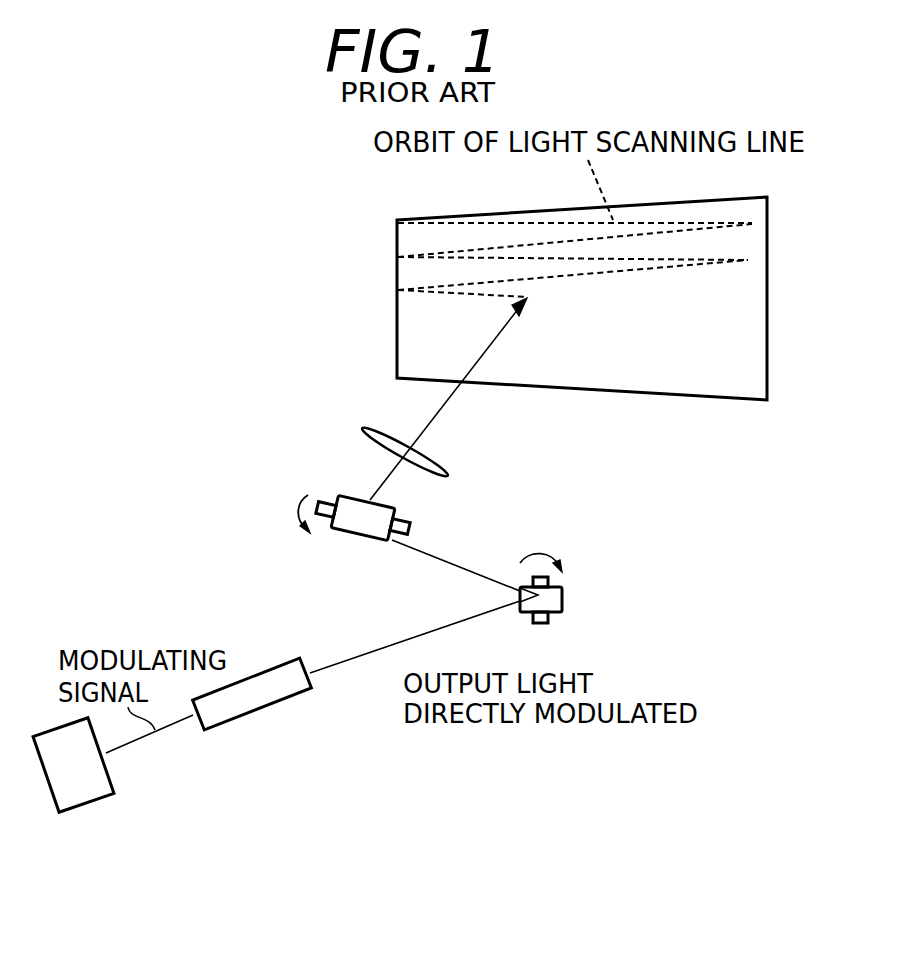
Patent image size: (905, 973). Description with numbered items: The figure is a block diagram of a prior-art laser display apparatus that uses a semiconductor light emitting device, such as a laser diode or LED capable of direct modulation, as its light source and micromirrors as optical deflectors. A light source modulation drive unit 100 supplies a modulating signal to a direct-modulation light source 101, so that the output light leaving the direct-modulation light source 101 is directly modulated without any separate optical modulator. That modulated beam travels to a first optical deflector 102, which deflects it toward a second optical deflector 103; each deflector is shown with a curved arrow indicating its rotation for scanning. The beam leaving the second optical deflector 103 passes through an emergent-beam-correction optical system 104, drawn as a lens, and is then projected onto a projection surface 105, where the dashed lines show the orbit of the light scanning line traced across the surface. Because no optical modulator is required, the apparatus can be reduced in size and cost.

The light source modulation drive unit 100 is at (95, 802).
The direct-modulation light source 101 is at (260, 712).
The first optical deflector 102 is at (562, 610).
The second optical deflector 103 is at (363, 542).
The emergent-beam-correction optical system 104 is at (448, 467).
The projection surface 105 is at (560, 380).